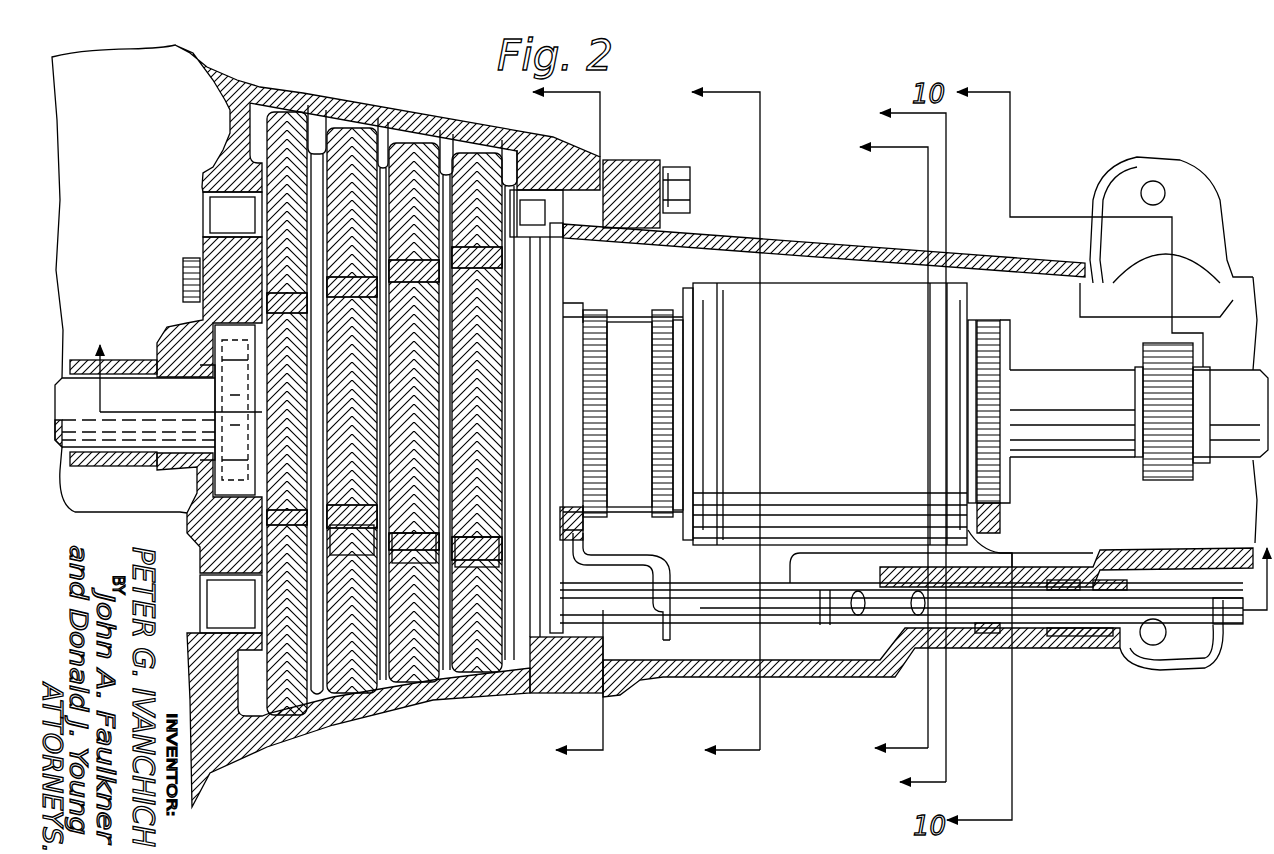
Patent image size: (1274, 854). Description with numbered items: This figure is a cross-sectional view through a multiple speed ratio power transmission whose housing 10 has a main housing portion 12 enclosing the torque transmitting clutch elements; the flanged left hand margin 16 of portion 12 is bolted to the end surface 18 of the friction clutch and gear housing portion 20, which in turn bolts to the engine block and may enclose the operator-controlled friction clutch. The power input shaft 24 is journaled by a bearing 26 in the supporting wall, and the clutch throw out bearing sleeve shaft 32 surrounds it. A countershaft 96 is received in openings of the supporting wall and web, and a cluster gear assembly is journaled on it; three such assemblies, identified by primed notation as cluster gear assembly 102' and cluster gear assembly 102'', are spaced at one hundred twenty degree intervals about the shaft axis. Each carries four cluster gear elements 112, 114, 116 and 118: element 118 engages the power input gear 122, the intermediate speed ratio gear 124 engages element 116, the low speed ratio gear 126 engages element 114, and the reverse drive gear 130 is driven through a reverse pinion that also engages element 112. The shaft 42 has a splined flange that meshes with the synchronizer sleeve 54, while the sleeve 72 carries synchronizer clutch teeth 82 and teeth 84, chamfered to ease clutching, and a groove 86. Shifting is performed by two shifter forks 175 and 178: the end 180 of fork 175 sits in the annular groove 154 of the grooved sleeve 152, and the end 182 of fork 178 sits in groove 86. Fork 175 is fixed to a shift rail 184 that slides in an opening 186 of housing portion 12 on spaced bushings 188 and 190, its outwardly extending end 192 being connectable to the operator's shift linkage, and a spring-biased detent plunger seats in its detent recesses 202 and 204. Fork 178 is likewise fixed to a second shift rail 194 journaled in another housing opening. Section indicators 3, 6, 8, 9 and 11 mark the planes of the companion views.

The friction clutch and gear housing portion 20 is at (212, 74).
The housing 10 is at (304, 86).
The cluster gear assembly 102' is at (380, 378).
The end surface 18 is at (585, 163).
The left hand margin 16 is at (643, 162).
The main housing portion 12 is at (800, 240).
The synchronizer sleeve 54 is at (860, 285).
The annular groove 154 is at (975, 320).
The grooved sleeve 152 is at (1000, 307).
The shaft 42 is at (1100, 347).
The groove 86 is at (563, 320).
The synchronizer clutch teeth 84 is at (603, 307).
The synchronizer clutch teeth 82 is at (663, 312).
The sleeve 72 is at (627, 337).
The fork end 182 is at (593, 487).
The shifter fork 178 is at (593, 533).
The bushing 190 is at (903, 557).
The fork end 180 is at (1000, 497).
The shifter fork 175 is at (1005, 524).
The section line 3 is at (683, 456).
The bearing 26 is at (228, 360).
The power input gear 122 is at (240, 338).
The power input shaft 24 is at (88, 430).
The clutch throw out bearing sleeve shaft 32 is at (130, 440).
The intermediate speed ratio gear 124 is at (338, 532).
The low speed ratio gear 126 is at (410, 545).
The reverse drive gear 130 is at (472, 545).
The cluster gear element 118 is at (287, 700).
The cluster gear element 116 is at (350, 685).
The cluster gear element 114 is at (407, 680).
The cluster gear element 112 is at (473, 677).
The cluster gear assembly 102'' is at (470, 456).
The countershaft 96 is at (537, 620).
The shift rail 194 is at (717, 617).
The shift rail 184 is at (830, 625).
The detent recess 204 is at (860, 615).
The detent recess 202 is at (920, 615).
The opening 186 is at (990, 633).
The bushing 188 is at (1065, 640).
The outwardly extending end 192 is at (1210, 645).
The section line 11 is at (552, 424).
The section line 6 is at (713, 423).
The section line 8 is at (877, 451).
The section line 9 is at (894, 449).